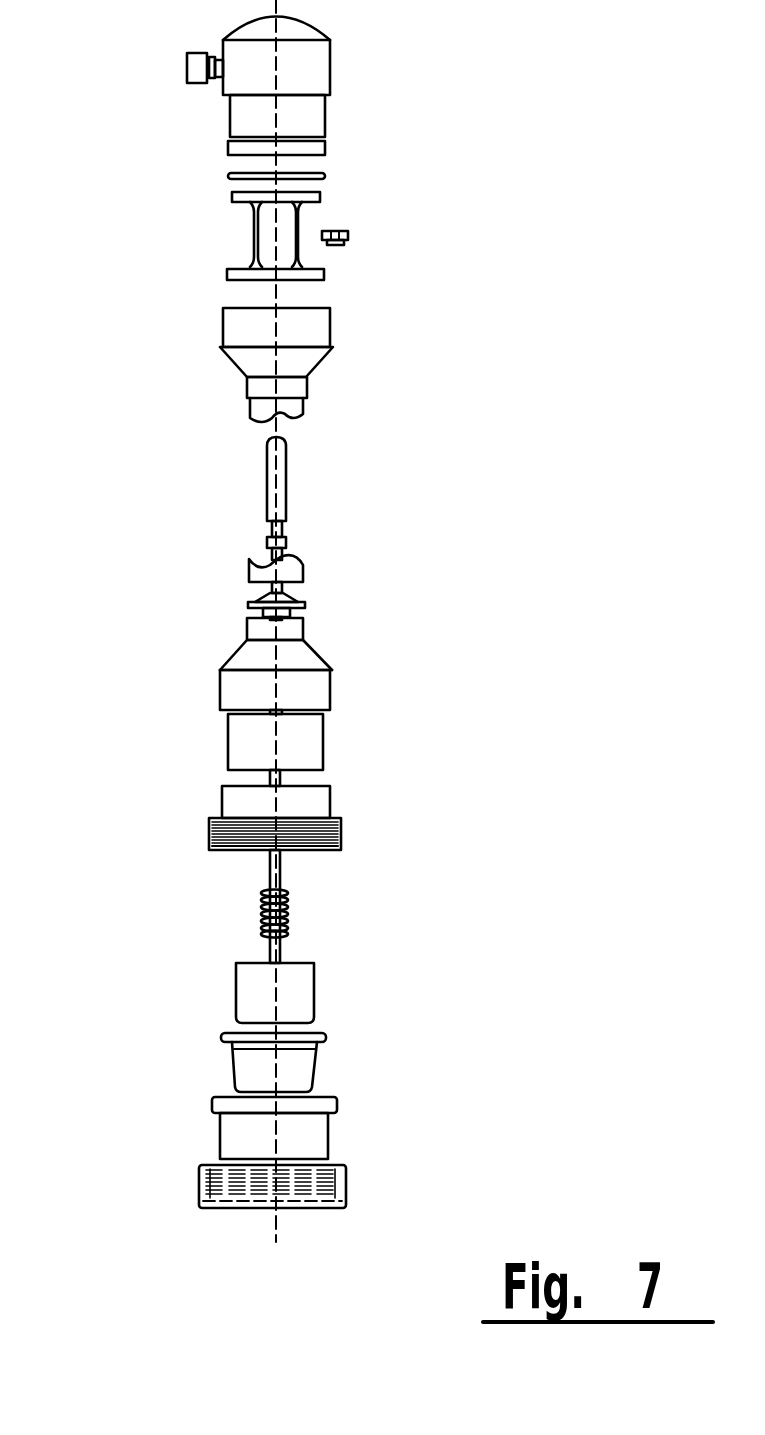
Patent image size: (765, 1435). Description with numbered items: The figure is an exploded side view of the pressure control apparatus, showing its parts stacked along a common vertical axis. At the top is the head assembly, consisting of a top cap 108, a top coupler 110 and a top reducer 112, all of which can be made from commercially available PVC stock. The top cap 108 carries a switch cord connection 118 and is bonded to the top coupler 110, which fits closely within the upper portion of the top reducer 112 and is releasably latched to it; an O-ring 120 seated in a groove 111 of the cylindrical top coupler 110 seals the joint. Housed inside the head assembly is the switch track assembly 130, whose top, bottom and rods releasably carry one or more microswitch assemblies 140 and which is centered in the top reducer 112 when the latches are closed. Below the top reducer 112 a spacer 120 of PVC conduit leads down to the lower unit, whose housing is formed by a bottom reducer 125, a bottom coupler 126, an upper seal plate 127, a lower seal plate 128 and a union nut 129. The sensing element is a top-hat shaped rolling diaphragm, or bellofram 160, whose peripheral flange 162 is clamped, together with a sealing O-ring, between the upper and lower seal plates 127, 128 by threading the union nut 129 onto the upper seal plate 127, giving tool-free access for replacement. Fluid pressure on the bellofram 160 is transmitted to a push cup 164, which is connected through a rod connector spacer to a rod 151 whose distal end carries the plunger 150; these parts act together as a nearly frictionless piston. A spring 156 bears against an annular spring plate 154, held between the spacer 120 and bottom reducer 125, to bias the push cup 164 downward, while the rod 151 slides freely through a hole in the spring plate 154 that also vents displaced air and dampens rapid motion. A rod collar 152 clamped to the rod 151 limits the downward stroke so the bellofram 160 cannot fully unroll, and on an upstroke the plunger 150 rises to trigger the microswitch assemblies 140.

The top cap 108 is at (330, 61).
The top coupler 110 is at (325, 112).
The groove 111 is at (325, 138).
The top reducer 112 is at (322, 362).
The switch cord connection 118 is at (186, 72).
The O-ring / spacer 120 is at (325, 175).
The bottom reducer 125 is at (331, 700).
The bottom coupler 126 is at (323, 748).
The upper seal plate 127 is at (341, 833).
The lower seal plate 128 is at (337, 1106).
The union nut 129 is at (346, 1183).
The switch track assembly 130 is at (324, 273).
The microswitch assembly 140 is at (348, 233).
The plunger 150 is at (286, 492).
The rod 151 is at (283, 953).
The rod collar 152 is at (288, 547).
The spring plate 154 is at (300, 603).
The spring 156 is at (288, 925).
The bellofram 160 is at (317, 1052).
The flange 162 is at (222, 1036).
The push cup 164 is at (314, 995).